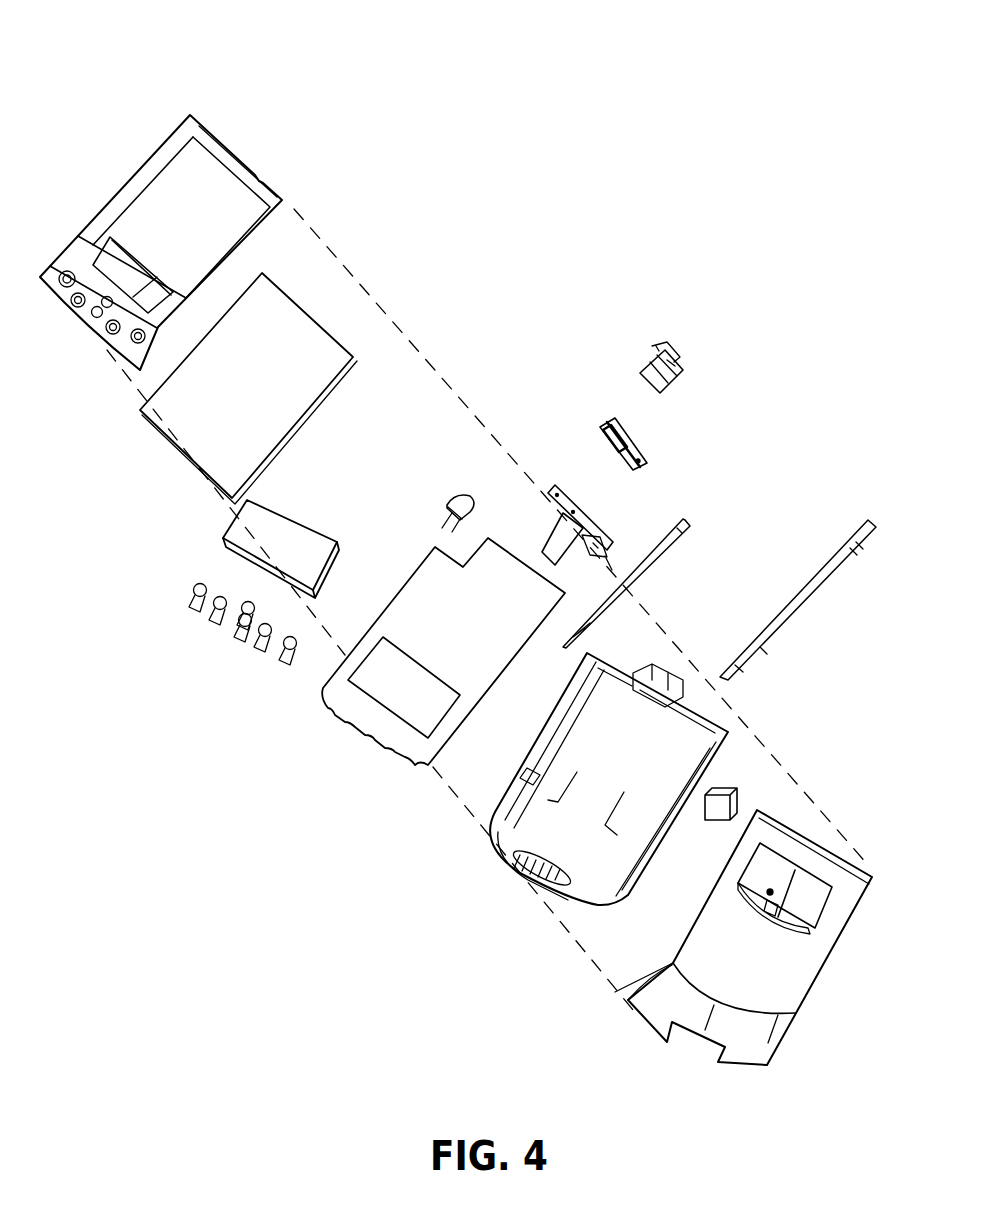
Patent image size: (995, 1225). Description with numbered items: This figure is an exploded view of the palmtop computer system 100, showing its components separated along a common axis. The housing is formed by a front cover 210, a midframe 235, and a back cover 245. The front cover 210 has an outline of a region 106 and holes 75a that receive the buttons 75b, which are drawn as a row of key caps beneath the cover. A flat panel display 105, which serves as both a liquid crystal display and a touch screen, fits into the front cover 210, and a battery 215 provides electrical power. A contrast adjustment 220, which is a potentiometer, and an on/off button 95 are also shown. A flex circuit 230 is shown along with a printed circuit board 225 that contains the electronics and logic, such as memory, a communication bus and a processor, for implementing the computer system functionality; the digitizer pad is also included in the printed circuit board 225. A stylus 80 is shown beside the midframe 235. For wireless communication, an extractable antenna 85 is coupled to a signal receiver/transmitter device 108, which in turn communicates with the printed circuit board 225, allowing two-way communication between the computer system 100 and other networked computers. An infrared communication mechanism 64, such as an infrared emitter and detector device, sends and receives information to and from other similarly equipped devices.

The palmtop computer system 100 is at (262, 34).
The front cover 210 is at (300, 206).
The region 106 is at (118, 273).
The holes 75a is at (63, 287).
The flat panel display 105 is at (333, 322).
The battery 215 is at (243, 512).
The buttons 75b is at (193, 590).
The contrast adjustment 220 is at (447, 494).
The printed circuit board 225 is at (323, 685).
The on/off button 95 is at (667, 350).
The infrared communication mechanism 64 is at (643, 437).
The flex circuit 230 is at (597, 518).
The antenna 85 is at (691, 520).
The stylus 80 is at (840, 572).
The midframe 235 is at (740, 751).
The receiver/transmitter device 108 is at (745, 790).
The back cover 245 is at (822, 985).